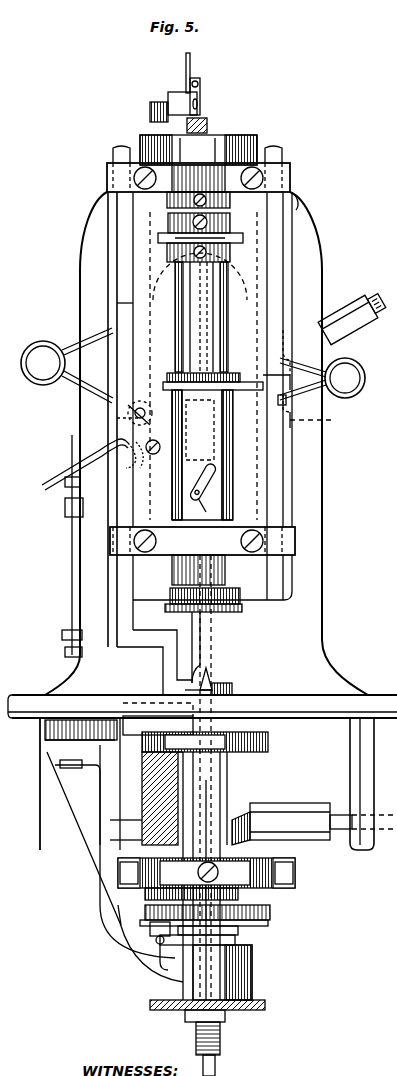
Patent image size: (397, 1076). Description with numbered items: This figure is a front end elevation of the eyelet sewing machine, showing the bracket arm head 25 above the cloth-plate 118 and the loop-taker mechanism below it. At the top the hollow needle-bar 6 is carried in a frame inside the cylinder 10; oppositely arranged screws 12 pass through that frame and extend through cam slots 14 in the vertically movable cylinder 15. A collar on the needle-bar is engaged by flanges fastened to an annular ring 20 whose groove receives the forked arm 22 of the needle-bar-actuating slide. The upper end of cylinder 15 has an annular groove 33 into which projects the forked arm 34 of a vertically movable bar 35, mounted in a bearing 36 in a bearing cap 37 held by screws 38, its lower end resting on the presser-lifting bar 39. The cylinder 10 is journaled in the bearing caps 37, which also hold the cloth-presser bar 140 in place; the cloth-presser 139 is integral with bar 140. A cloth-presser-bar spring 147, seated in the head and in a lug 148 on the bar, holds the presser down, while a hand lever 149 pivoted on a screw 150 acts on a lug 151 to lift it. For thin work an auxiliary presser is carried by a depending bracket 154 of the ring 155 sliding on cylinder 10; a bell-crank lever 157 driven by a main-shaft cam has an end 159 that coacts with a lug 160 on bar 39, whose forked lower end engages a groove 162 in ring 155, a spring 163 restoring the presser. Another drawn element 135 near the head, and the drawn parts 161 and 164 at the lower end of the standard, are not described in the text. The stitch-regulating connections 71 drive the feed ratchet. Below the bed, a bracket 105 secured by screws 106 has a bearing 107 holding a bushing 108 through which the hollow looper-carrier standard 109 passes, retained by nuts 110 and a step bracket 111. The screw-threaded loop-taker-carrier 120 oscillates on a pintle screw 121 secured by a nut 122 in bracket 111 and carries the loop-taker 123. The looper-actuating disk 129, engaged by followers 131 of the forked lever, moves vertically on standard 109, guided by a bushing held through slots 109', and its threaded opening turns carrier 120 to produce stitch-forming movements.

The hollow needle-bar 6 is at (205, 130).
The cylinder 10 is at (228, 322).
The screws 12 is at (206, 490).
The cam slots 14 is at (194, 508).
The vertically movable cylinder 15 is at (170, 488).
The annular ring 20 is at (168, 226).
The forked arm 22 is at (165, 246).
The head 25 is at (266, 448).
The annular groove 33 is at (172, 376).
The forked arm 34 is at (250, 380).
The vertically movable bar 35 is at (275, 268).
The bearing 36 is at (278, 168).
The bearing cap 37 is at (190, 168).
The screws 38 is at (167, 204).
The presser-lifting bar 39 is at (283, 505).
The stitch-regulating connections 71 is at (352, 300).
The bracket 105 is at (125, 955).
The screws 106 is at (72, 768).
The bearing 107 is at (252, 970).
The bushing 108 is at (236, 943).
The hollow looper-carrier standard 109 is at (210, 870).
The slots 109' is at (243, 890).
The nuts 110 is at (265, 1003).
The step bracket 111 is at (270, 913).
The cloth-plate 118 is at (268, 742).
The loop-taker-carrier 120 is at (112, 808).
The pintle screw 121 is at (174, 957).
The nut 122 is at (150, 928).
The loop-taker 123 is at (142, 718).
The looper-actuating disk 129 is at (262, 856).
The followers 131 is at (118, 876).
The pin 135 is at (149, 404).
The cloth-presser 139 is at (230, 687).
The cloth-presser bar 140 is at (118, 278).
The cloth-presser-bar spring 147 is at (38, 385).
The lug 148 is at (117, 414).
The hand lever 149 is at (50, 490).
The screw 150 is at (140, 460).
The lug 151 is at (120, 436).
The depending bracket 154 is at (197, 645).
The ring 155 is at (170, 610).
The bell-crank lever 157 is at (117, 305).
The end of bell-crank lever 159 is at (327, 420).
The lug 160 is at (278, 404).
The rod 161 is at (216, 1066).
The groove 162 is at (172, 602).
The spring 163 is at (366, 384).
The nut 164 is at (165, 1000).